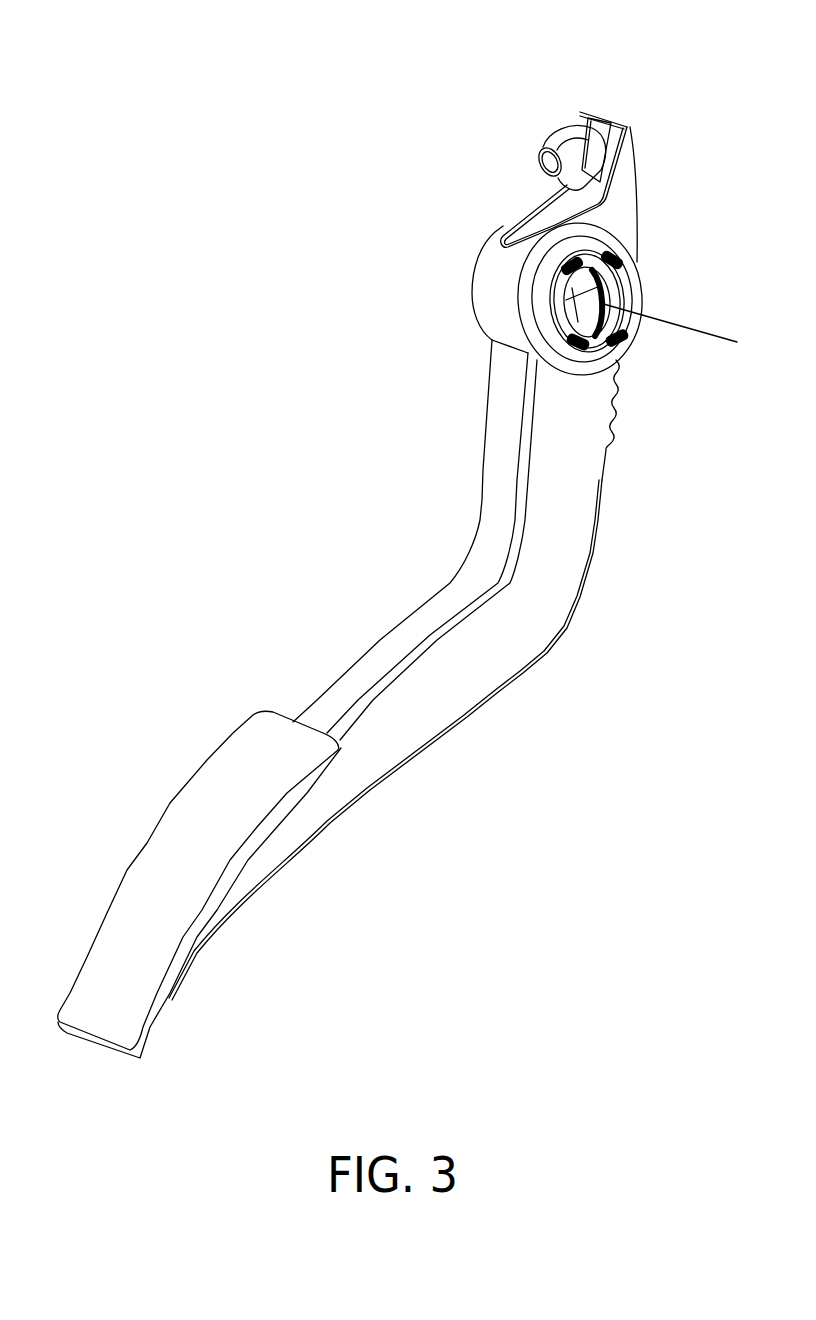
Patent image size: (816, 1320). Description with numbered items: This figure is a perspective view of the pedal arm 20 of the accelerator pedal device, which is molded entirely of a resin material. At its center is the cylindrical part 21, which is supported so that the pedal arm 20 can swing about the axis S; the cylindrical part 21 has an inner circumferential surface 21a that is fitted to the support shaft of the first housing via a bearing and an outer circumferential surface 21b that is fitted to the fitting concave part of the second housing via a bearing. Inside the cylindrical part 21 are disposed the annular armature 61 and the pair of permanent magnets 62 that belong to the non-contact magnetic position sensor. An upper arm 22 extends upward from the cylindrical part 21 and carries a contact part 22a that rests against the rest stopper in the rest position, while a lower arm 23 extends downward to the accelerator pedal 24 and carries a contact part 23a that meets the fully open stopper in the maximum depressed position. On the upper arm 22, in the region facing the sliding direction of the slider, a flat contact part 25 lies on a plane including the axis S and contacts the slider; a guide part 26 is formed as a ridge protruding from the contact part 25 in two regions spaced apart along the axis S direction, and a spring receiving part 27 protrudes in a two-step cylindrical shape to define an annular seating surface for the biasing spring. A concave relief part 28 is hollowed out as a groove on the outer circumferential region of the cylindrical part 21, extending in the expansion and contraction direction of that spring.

The pedal arm 20 is at (418, 522).
The cylindrical part 21 is at (500, 285).
The inner circumferential surface 21a is at (630, 330).
The outer circumferential surface 21b is at (542, 297).
The upper arm 22 is at (625, 183).
The contact part 22a is at (637, 150).
The lower arm 23 is at (548, 628).
The contact part 23a is at (613, 405).
The accelerator pedal 24 is at (205, 787).
The contact part 25 is at (553, 185).
The guide part 26 is at (615, 123).
The spring receiving part 27 is at (557, 133).
The concave relief part 28 is at (548, 217).
The armature 61 is at (612, 290).
The permanent magnet 62 is at (617, 263).
The axis S is at (473, 268).